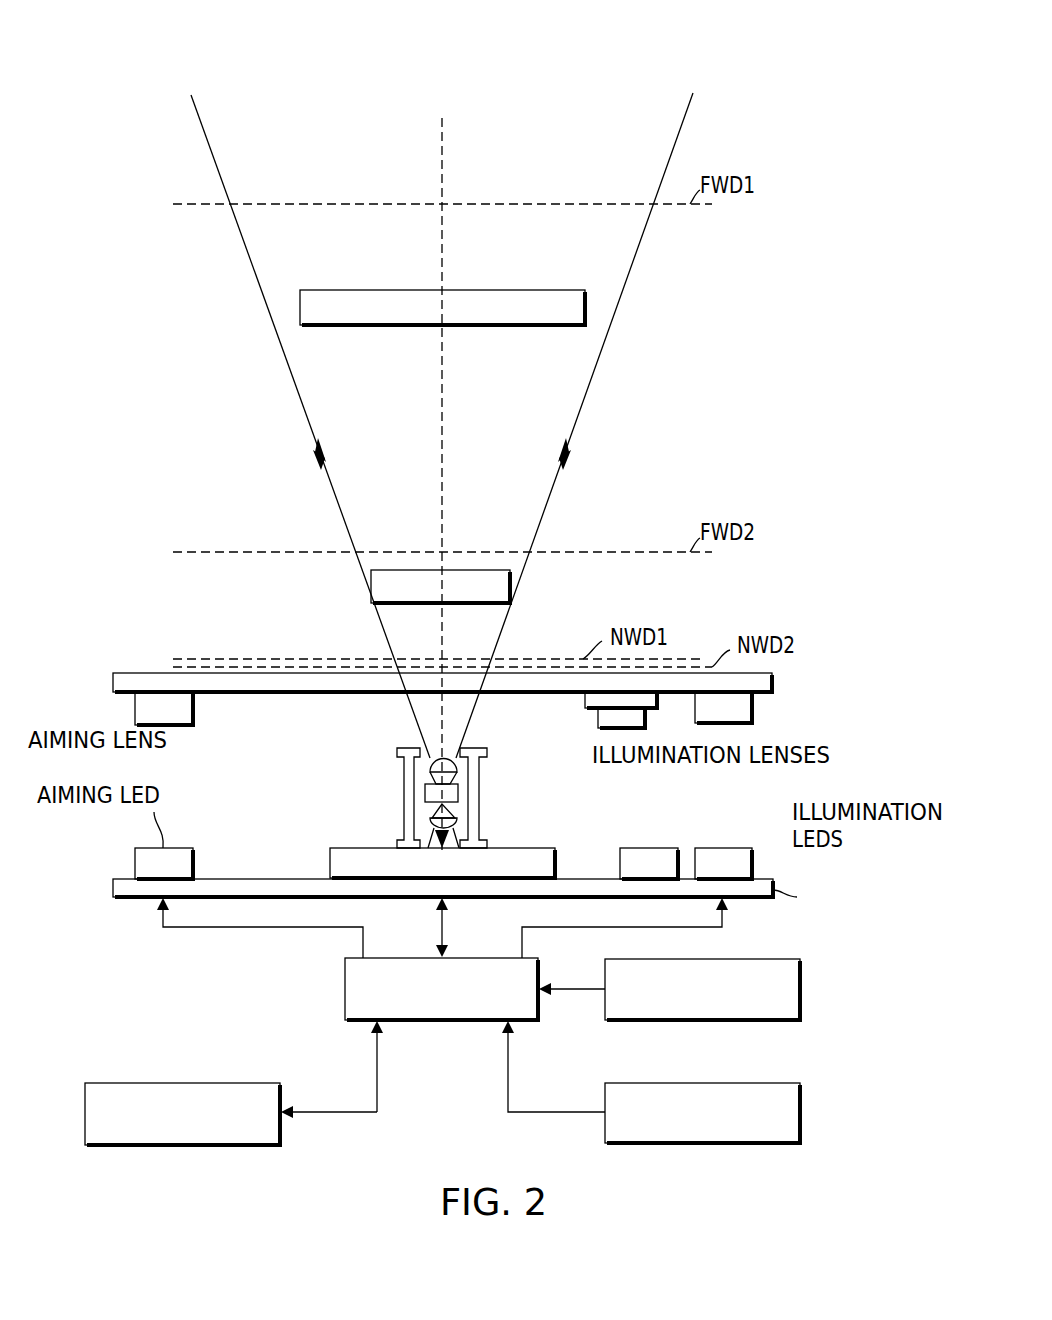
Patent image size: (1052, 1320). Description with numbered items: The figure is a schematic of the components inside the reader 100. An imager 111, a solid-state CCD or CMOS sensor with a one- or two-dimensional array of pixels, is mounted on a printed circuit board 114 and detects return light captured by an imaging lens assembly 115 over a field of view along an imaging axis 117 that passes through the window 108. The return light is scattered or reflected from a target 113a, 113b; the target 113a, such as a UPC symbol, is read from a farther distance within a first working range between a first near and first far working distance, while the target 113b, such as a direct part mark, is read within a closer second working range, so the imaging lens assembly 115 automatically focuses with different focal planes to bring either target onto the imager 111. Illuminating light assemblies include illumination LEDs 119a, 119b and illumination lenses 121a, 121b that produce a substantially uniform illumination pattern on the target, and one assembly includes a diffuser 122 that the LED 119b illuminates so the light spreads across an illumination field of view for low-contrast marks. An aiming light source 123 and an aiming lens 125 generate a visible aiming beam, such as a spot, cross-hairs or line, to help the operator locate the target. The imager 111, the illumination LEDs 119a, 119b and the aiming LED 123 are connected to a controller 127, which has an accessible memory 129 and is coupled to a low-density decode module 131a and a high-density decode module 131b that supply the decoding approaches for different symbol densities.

The reader 100 is at (100, 52).
The imaging axis 117 is at (442, 150).
The target 113a is at (513, 326).
The target 113b is at (510, 588).
The window 108 is at (113, 681).
The aiming lens 125 is at (135, 708).
The diffuser 122 is at (585, 700).
The illumination lens 121a is at (752, 708).
The illumination lens 121b is at (598, 723).
The imaging lens assembly 115 is at (397, 796).
The imager 111 is at (330, 863).
The aiming light source 123 is at (135, 855).
The light emitting diode 119a is at (722, 848).
The light emitting diode 119b is at (642, 848).
The printed circuit board 114 is at (113, 886).
The controller 127 is at (445, 1022).
The memory 129 is at (85, 1116).
The low-density decode module 131a is at (800, 992).
The high-density decode module 131b is at (800, 1115).